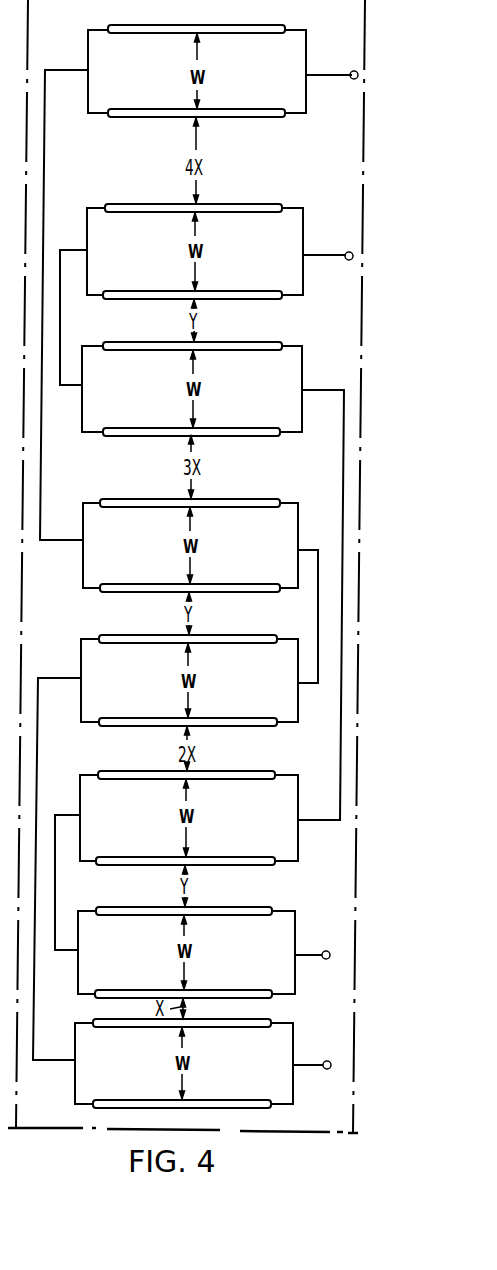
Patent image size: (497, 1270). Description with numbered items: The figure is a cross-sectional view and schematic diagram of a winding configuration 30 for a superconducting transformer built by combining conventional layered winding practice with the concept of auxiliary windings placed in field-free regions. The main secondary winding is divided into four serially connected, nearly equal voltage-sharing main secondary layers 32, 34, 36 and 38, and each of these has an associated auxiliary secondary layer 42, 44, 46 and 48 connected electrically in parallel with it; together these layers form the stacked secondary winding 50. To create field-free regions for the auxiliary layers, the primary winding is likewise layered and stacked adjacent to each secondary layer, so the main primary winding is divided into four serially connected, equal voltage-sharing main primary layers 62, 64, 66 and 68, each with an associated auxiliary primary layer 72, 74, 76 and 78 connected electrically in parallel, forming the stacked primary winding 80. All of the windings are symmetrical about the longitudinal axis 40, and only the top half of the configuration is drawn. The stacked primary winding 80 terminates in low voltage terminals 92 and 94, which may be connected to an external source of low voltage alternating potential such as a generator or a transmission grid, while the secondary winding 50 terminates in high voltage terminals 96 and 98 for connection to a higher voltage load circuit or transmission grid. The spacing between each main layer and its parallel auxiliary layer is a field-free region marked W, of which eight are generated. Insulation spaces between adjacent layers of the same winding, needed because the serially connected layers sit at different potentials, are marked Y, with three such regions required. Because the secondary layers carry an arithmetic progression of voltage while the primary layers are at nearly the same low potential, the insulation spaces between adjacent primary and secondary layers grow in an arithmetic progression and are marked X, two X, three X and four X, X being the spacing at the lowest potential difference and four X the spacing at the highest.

The winding configuration 30 is at (52, 37).
The main secondary layer 32 is at (243, 986).
The main secondary layer 34 is at (245, 771).
The main secondary layer 36 is at (258, 421).
The main secondary layer 38 is at (258, 211).
The longitudinal axis 40 is at (70, 1128).
The auxiliary secondary layer 42 is at (243, 902).
The auxiliary secondary layer 44 is at (245, 852).
The auxiliary secondary layer 46 is at (258, 339).
The auxiliary secondary layer 48 is at (258, 289).
The stacked secondary winding 50 is at (305, 292).
The main primary layer 62 is at (247, 1028).
The main primary layer 64 is at (249, 716).
The main primary layer 66 is at (255, 499).
The main primary layer 68 is at (233, 119).
The auxiliary primary layer 72 is at (245, 1099).
The auxiliary primary layer 74 is at (251, 636).
The auxiliary primary layer 76 is at (255, 582).
The auxiliary primary layer 78 is at (238, 23).
The stacked primary winding 80 is at (88, 98).
The low voltage terminal 92 is at (329, 1063).
The low voltage terminal 94 is at (351, 71).
The high voltage terminal 96 is at (331, 952).
The high voltage terminal 98 is at (349, 253).